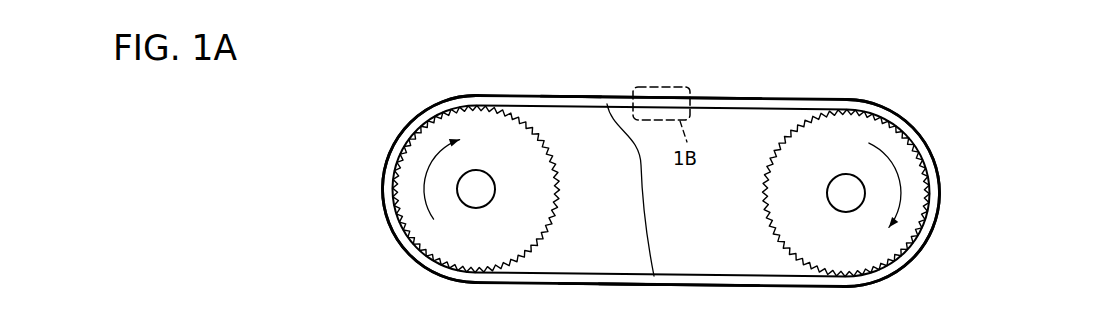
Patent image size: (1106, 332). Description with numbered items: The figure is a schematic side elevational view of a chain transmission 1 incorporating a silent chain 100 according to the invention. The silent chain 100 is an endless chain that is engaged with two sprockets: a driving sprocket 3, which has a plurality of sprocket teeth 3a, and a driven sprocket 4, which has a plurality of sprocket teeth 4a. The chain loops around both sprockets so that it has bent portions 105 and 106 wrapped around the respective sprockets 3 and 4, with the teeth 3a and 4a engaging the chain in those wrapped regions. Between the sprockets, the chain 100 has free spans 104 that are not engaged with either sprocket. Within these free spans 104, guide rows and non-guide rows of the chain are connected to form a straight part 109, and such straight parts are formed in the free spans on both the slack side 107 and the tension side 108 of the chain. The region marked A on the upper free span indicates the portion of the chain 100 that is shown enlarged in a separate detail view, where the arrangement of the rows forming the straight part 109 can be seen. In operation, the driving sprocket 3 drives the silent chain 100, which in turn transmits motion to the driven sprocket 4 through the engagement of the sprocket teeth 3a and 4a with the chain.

The chain transmission 1 is at (962, 121).
The driving sprocket 3 is at (412, 163).
The sprocket teeth 3a is at (555, 157).
The driven sprocket 4 is at (918, 193).
The sprocket teeth 4a is at (763, 173).
The silent chain 100 is at (800, 92).
The free spans 104 is at (575, 96).
The bent portion 105 is at (390, 225).
The bent portion 106 is at (929, 233).
The slack side 107 is at (729, 98).
The tension side 108 is at (770, 285).
The straight part 109 is at (632, 190).
The enlarged region A is at (661, 72).